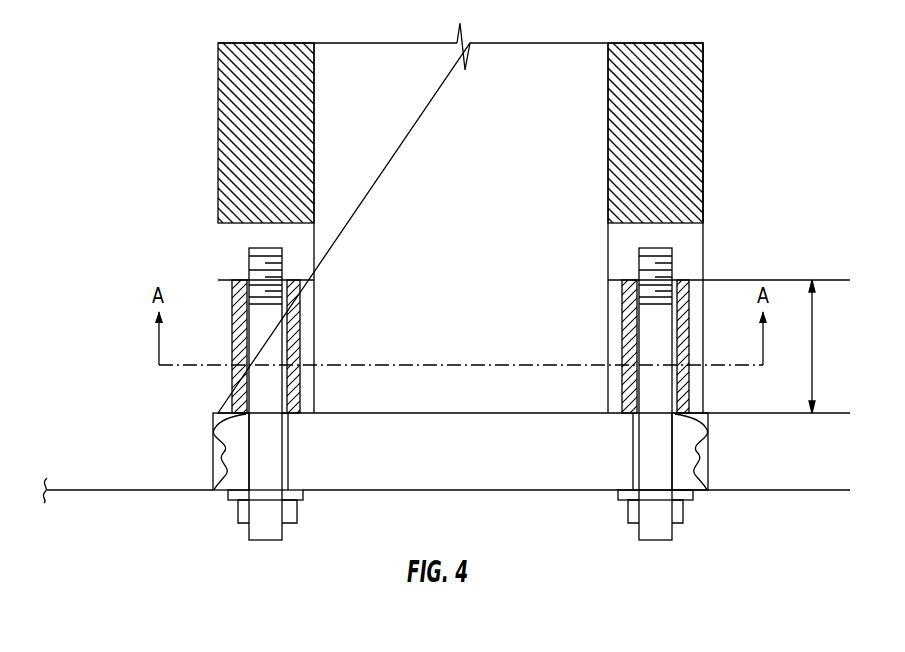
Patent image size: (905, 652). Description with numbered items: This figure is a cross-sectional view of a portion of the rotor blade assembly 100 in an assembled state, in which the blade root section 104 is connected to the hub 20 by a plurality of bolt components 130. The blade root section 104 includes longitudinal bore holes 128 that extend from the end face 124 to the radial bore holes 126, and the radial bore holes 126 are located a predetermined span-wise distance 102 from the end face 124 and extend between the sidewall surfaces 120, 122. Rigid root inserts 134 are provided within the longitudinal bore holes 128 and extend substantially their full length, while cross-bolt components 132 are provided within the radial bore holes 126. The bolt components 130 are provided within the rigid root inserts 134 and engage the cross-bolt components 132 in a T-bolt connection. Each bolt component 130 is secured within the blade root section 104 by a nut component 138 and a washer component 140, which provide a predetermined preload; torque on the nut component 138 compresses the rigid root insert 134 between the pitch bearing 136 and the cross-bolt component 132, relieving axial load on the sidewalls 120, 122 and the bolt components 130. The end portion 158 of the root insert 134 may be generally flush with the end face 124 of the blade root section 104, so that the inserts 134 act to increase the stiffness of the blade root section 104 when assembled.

The rotor blade assembly 100 is at (137, 118).
The blade root section 104 is at (218, 135).
The sidewall surface 120 is at (692, 162).
The sidewall surface 122 is at (608, 152).
The radial bore hole 126 is at (315, 248).
The cross-bolt component 132 is at (233, 243).
The rigid root insert 134 is at (240, 389).
The longitudinal bore hole 128 is at (299, 342).
The bolt component 130 is at (270, 323).
The end portion of the root insert 158 is at (213, 428).
The end face 124 is at (710, 414).
The pitch bearing 136 is at (702, 482).
The hub 20 is at (90, 490).
The washer component 140 is at (229, 492).
The nut component 138 is at (239, 524).
The span-wise distance 102 is at (812, 345).